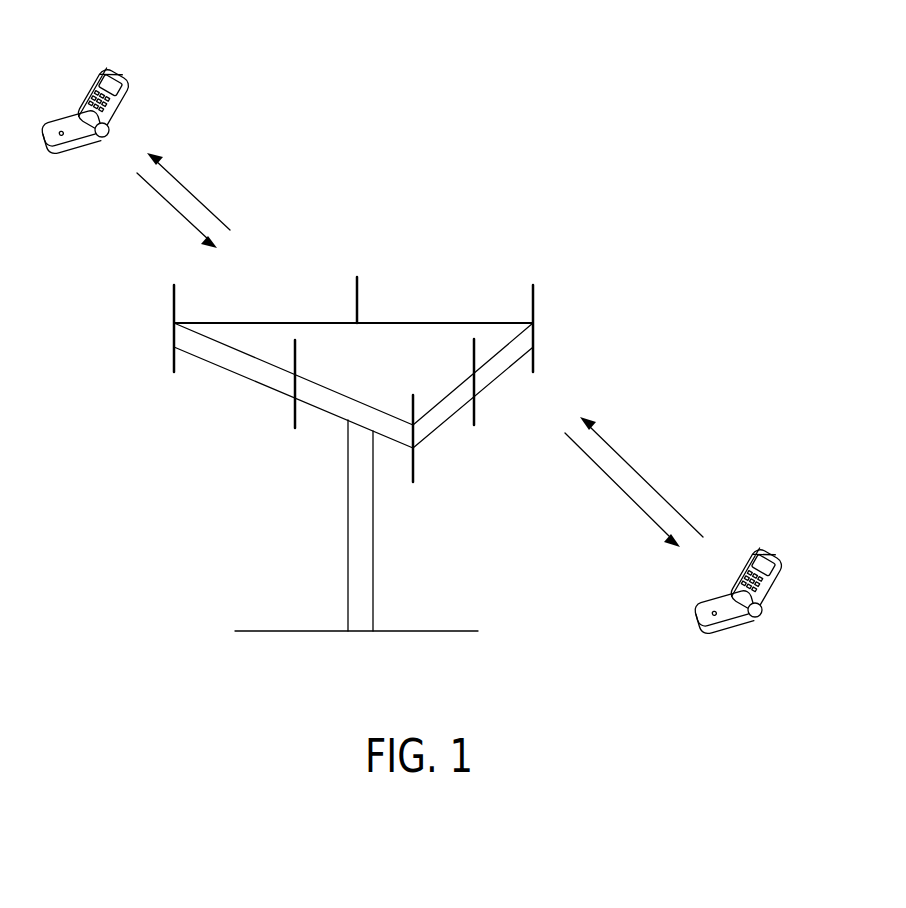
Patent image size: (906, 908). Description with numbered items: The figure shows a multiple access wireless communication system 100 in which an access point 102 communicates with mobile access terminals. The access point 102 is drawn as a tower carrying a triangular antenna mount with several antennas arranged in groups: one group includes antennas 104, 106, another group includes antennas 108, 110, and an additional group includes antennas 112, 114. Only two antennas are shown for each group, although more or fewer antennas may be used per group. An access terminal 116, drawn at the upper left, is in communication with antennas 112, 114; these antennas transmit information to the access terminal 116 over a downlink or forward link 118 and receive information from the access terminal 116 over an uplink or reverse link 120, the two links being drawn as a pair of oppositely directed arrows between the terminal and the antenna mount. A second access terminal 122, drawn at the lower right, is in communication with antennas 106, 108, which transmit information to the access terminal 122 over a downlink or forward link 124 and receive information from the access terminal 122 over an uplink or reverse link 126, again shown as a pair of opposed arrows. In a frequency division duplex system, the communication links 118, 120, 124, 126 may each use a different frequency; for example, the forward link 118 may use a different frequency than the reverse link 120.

The multiple access wireless communication system 100 is at (592, 97).
The access point 102 is at (363, 632).
The antenna 104 is at (533, 291).
The antenna 106 is at (476, 420).
The antenna 108 is at (416, 478).
The antenna 110 is at (295, 420).
The antenna 112 is at (174, 297).
The antenna 114 is at (357, 280).
The access terminal 116 is at (114, 72).
The downlink or forward link 118 is at (197, 198).
The uplink or reverse link 120 is at (170, 212).
The access terminal 122 is at (768, 553).
The downlink or forward link 124 is at (622, 493).
The uplink or reverse link 126 is at (643, 476).